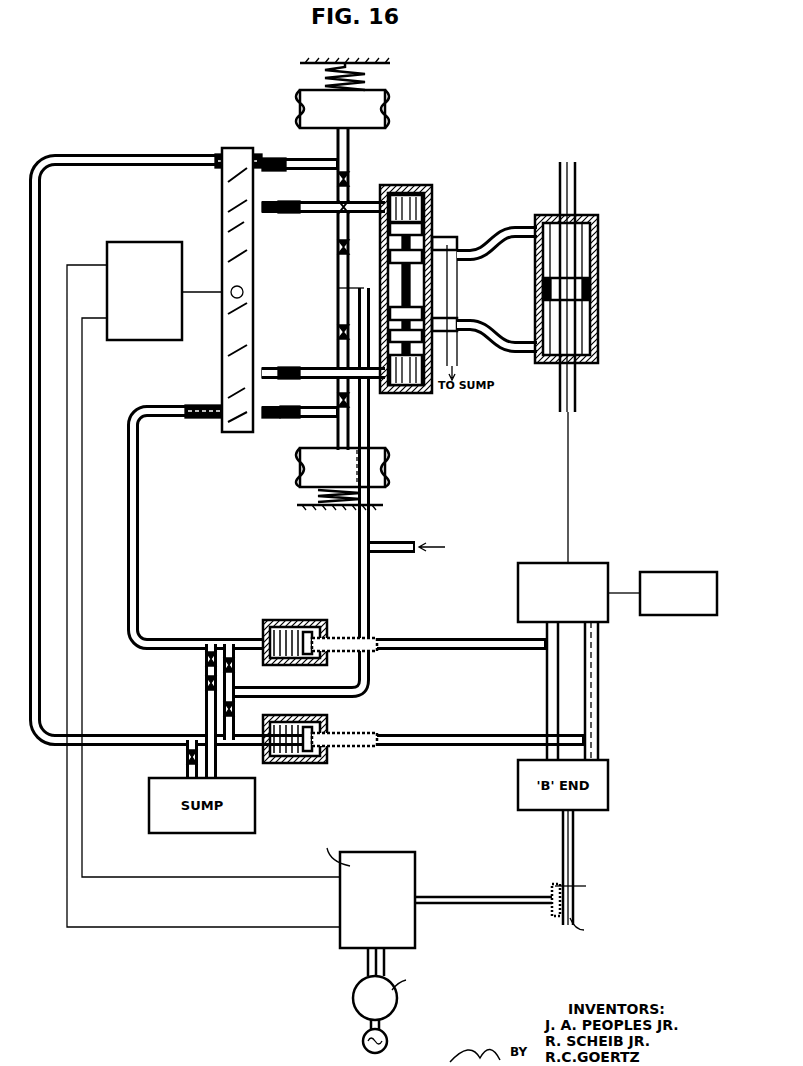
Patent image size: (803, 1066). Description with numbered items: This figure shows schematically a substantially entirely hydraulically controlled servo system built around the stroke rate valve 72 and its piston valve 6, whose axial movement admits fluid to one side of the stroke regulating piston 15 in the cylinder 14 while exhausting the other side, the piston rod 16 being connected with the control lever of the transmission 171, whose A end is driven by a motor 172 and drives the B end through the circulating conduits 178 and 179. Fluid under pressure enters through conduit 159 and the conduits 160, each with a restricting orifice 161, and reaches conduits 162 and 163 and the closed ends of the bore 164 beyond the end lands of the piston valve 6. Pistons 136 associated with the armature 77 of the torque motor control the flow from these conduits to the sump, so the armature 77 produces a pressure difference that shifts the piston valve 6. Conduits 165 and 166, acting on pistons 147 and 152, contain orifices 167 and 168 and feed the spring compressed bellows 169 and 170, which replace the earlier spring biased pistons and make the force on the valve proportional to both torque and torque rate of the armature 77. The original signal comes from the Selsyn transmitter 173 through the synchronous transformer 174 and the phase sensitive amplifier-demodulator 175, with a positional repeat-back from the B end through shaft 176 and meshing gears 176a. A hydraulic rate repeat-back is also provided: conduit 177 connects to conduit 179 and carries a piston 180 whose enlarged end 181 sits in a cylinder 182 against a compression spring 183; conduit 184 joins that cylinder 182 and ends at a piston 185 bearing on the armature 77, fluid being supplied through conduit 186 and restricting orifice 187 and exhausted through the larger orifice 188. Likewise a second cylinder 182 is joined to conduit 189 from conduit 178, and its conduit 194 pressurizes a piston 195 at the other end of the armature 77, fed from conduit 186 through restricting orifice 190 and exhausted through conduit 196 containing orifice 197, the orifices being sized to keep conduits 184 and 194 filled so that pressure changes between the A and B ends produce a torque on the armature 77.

The piston valve 6 is at (405, 293).
The cylinder 14 is at (598, 235).
The stroke regulating piston 15 is at (596, 291).
The piston rod 16 is at (545, 250).
The stroke rate valve 72 is at (430, 206).
The armature 77 is at (222, 252).
The pistons 136 is at (270, 202).
The piston 147 is at (272, 158).
The piston 152 is at (272, 405).
The conduit 159 is at (409, 552).
The conduits 160 is at (340, 258).
The restricting orifice 161 is at (337, 249).
The conduit 162 is at (325, 202).
The conduit 163 is at (322, 367).
The closed ends of the bore 164 is at (418, 193).
The conduit 165 is at (333, 160).
The conduit 166 is at (320, 421).
The orifice 167 is at (350, 174).
The orifice 168 is at (338, 398).
The spring compressed bellows 169 is at (385, 104).
The spring compressed bellows 170 is at (385, 465).
The transmission 171 is at (578, 563).
The motor 172 is at (712, 572).
The Selsyn transmitter 173 is at (352, 996).
The synchronous transformer 174 is at (410, 876).
The amplifier-demodulator 175 is at (107, 246).
The shaft 176 is at (500, 898).
The meshing gears 176a is at (552, 892).
The conduit 177 is at (470, 750).
The conduit 178 is at (547, 676).
The conduit 179 is at (598, 676).
The piston 180 is at (340, 637).
The enlarged end 181 is at (312, 624).
The cylinder 182 is at (305, 620).
The compression spring 183 is at (263, 625).
The conduit 184 is at (110, 747).
The piston 185 is at (216, 168).
The conduit 186 is at (340, 692).
The restricting orifice 187 is at (235, 710).
The orifice 188 is at (188, 757).
The conduit 189 is at (465, 637).
The restricting orifice 190 is at (235, 680).
The conduit 194 is at (140, 624).
The piston 195 is at (214, 411).
The conduit 196 is at (206, 667).
The orifice 197 is at (206, 683).